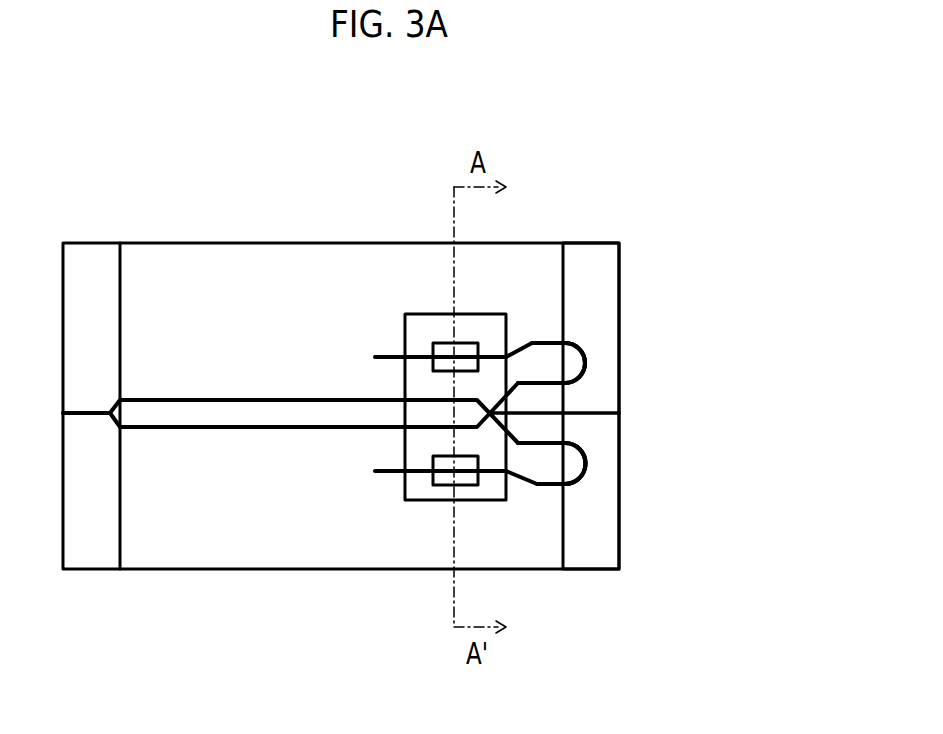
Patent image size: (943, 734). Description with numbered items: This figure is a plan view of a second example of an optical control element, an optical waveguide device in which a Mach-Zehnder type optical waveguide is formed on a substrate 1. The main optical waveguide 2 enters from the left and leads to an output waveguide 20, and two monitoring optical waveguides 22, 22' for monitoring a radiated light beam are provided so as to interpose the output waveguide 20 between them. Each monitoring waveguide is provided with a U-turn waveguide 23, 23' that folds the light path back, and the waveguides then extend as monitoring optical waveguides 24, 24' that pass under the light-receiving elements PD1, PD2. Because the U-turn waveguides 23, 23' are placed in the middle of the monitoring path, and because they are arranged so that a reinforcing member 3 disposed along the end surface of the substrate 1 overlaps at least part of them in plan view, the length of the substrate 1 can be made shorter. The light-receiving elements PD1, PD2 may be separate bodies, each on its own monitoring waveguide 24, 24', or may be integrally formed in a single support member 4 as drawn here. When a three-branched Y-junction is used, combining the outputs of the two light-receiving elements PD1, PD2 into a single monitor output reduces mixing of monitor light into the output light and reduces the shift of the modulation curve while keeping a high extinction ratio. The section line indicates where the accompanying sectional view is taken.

The substrate 1 is at (237, 258).
The optical waveguide 2 is at (207, 452).
The reinforcing member 3 is at (620, 507).
The support member 4 is at (417, 445).
The output waveguide 20 is at (585, 395).
The monitoring optical waveguide 22 is at (551, 253).
The monitoring optical waveguide 22' is at (552, 575).
The U-turn waveguide 23 is at (592, 275).
The U-turn waveguide 23' is at (606, 542).
The monitoring optical waveguide 24 is at (440, 268).
The monitoring optical waveguide 24' is at (440, 558).
The light-receiving element PD1 is at (472, 343).
The light-receiving element PD2 is at (472, 486).